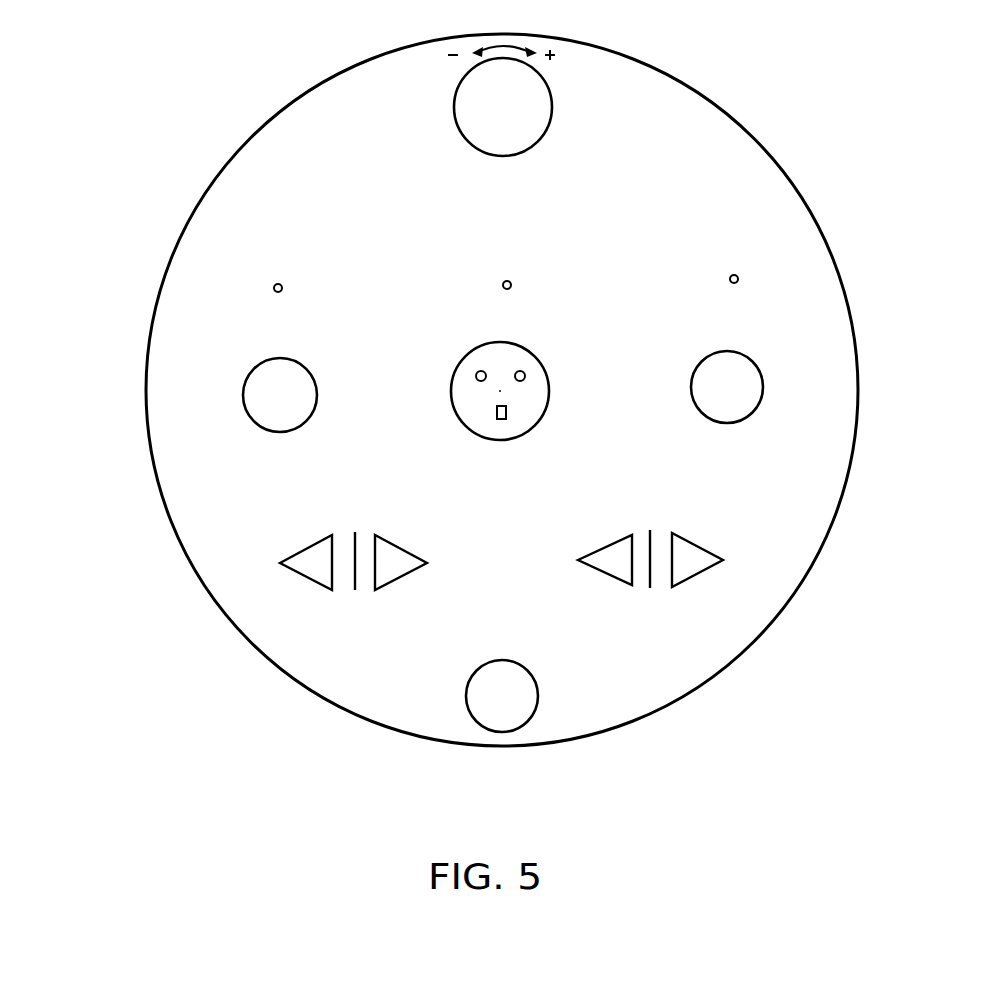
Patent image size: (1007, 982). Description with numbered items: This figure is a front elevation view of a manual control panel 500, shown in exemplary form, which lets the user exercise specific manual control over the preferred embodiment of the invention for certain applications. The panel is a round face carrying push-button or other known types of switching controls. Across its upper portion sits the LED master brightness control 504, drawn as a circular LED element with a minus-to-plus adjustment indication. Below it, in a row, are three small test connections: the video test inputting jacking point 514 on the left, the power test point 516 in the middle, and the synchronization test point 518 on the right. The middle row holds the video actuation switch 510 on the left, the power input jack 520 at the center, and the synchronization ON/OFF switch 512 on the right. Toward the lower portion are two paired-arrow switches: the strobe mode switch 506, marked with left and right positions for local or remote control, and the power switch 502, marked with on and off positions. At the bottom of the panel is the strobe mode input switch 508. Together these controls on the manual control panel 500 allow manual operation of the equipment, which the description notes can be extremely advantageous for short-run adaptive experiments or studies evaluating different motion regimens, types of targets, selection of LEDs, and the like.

The manual control panel 500 is at (564, 390).
The power switch 502 is at (720, 562).
The LED master brightness control 504 is at (552, 122).
The strobe mode switch 506 is at (300, 575).
The strobe mode input switch 508 is at (528, 722).
The video actuation switch 510 is at (284, 432).
The synchronization ON/OFF switch 512 is at (758, 405).
The video test inputting jacking point 514 is at (281, 284).
The power test point 516 is at (510, 282).
The synchronization test point 518 is at (737, 276).
The power input jack 520 is at (544, 372).